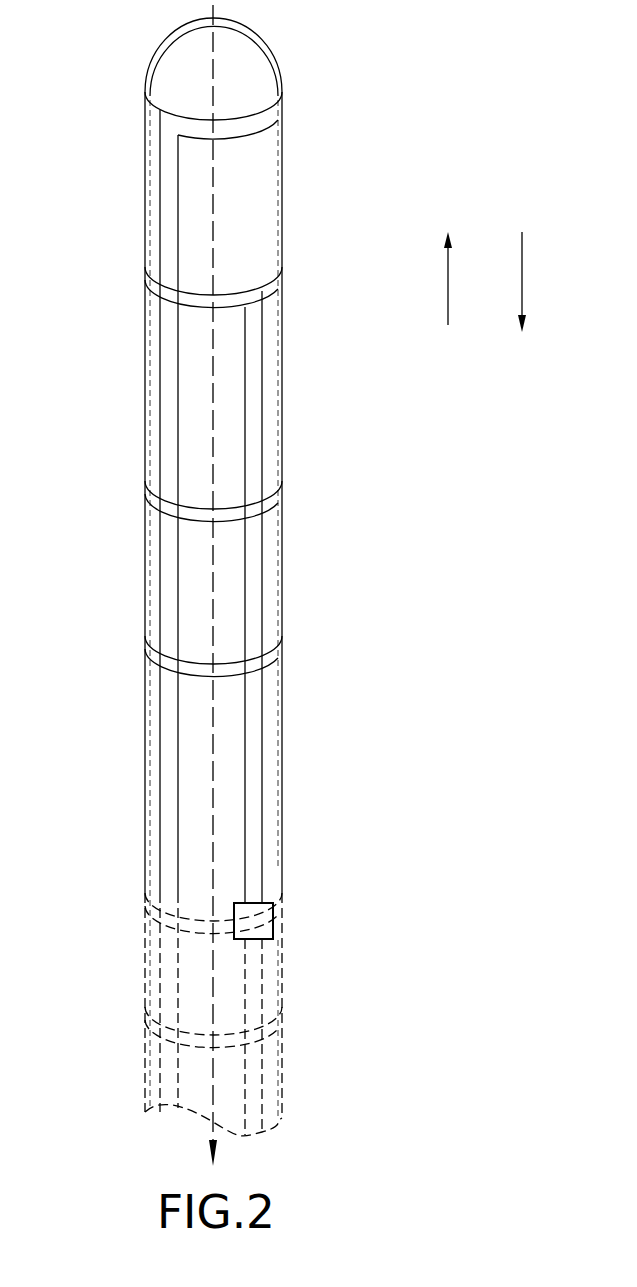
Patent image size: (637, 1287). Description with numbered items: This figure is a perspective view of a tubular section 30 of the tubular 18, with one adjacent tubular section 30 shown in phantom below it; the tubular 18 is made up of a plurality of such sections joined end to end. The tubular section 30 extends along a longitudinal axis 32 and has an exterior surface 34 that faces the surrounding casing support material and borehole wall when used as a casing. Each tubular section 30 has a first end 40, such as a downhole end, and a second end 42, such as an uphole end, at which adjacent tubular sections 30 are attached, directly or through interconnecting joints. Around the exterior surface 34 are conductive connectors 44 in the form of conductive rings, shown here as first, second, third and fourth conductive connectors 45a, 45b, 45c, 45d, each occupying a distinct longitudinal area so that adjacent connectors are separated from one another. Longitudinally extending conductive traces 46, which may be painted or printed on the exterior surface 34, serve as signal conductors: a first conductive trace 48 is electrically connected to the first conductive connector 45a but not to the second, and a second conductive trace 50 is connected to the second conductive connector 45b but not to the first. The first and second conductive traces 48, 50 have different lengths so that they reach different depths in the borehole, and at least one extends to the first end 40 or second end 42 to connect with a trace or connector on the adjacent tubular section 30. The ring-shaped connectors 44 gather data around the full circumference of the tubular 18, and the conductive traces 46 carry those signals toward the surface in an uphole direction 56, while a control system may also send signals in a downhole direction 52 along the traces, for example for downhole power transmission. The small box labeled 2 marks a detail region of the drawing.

The detail region 2 is at (253, 903).
The tubular 18 is at (282, 147).
The tubular section 30 is at (279, 323).
The longitudinal axis 32 is at (284, 1120).
The exterior surface 34 is at (270, 757).
The first end 40 is at (272, 903).
The second end 42 is at (272, 48).
The conductive connector 44 is at (132, 92).
The first conductive connector 45a is at (279, 105).
The second conductive connector 45b is at (279, 274).
The third conductive connector 45c is at (281, 490).
The fourth conductive connector 45d is at (281, 645).
The conductive trace 46 is at (195, 437).
The first conductive trace 48 is at (167, 367).
The second conductive trace 50 is at (250, 383).
The downhole direction 52 is at (465, 278).
The uphole direction 56 is at (539, 282).